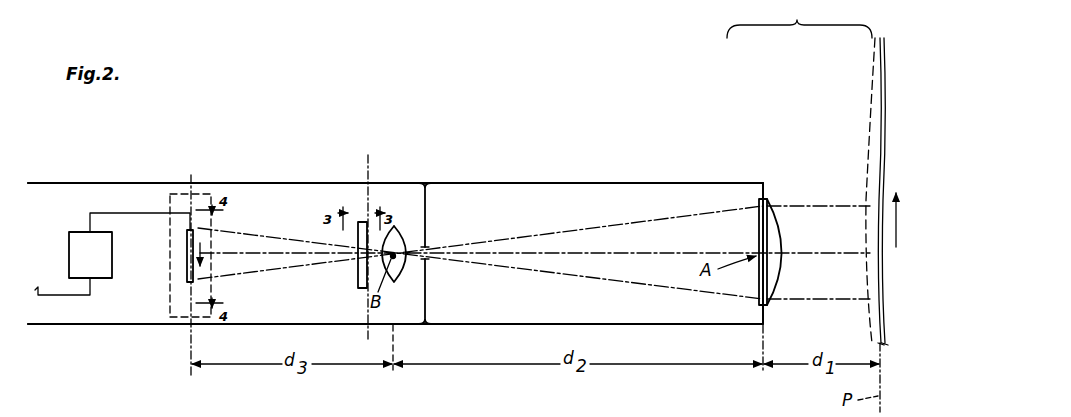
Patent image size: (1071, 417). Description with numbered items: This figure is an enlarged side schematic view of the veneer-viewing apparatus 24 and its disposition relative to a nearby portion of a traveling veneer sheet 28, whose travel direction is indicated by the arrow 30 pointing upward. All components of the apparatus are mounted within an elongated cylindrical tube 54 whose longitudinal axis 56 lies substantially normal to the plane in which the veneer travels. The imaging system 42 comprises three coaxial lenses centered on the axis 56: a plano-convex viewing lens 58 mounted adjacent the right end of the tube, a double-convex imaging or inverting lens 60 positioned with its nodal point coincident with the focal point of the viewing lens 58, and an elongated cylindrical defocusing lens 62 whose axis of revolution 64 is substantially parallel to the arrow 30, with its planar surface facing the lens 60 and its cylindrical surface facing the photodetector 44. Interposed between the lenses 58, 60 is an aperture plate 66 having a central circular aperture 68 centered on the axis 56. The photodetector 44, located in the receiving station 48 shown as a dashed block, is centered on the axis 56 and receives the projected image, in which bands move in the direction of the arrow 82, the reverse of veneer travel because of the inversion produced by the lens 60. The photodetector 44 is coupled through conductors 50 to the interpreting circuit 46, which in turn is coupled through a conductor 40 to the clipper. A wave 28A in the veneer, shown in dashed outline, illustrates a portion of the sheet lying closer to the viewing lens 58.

The apparatus 24 is at (280, 112).
The veneer sheet 28 is at (879, 136).
The wave in the sheet of veneer 28A is at (863, 143).
The arrow 30 is at (895, 226).
The conductor 40 is at (59, 295).
The imaging system 42 is at (543, 206).
The photodetector 44 is at (187, 273).
The interpreting circuit 46 is at (69, 250).
The receiving station 48 is at (192, 183).
The conductors 50 is at (136, 213).
The elongated cylindrical tube 54 is at (490, 183).
The longitudinal axis 56 is at (600, 256).
The viewing lens 58 is at (760, 232).
The imaging lens 60 is at (403, 228).
The cylindrical lens 62 is at (358, 282).
The axis of revolution 64 is at (380, 161).
The aperture plate 66 is at (427, 218).
The central circular aperture 68 is at (428, 257).
The arrow 82 is at (202, 247).